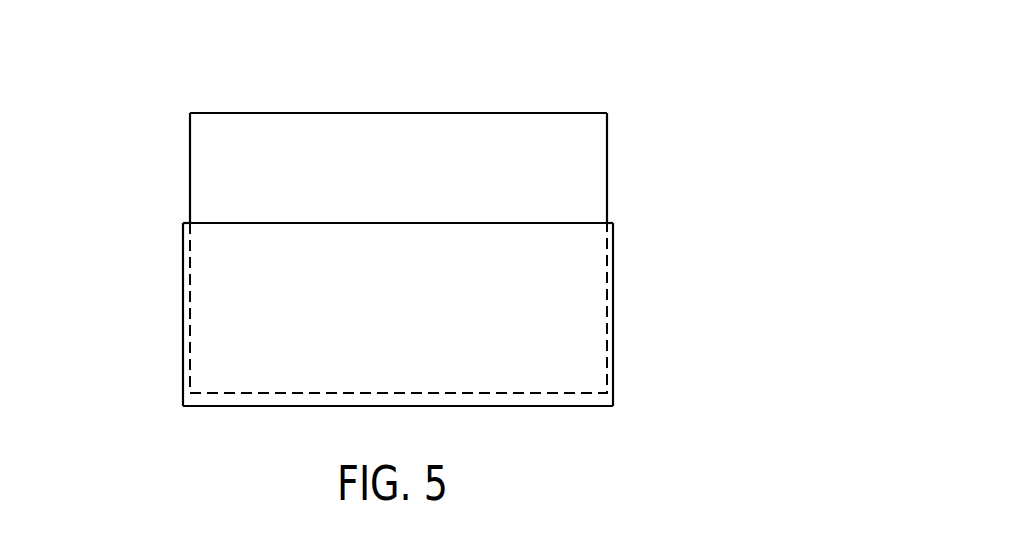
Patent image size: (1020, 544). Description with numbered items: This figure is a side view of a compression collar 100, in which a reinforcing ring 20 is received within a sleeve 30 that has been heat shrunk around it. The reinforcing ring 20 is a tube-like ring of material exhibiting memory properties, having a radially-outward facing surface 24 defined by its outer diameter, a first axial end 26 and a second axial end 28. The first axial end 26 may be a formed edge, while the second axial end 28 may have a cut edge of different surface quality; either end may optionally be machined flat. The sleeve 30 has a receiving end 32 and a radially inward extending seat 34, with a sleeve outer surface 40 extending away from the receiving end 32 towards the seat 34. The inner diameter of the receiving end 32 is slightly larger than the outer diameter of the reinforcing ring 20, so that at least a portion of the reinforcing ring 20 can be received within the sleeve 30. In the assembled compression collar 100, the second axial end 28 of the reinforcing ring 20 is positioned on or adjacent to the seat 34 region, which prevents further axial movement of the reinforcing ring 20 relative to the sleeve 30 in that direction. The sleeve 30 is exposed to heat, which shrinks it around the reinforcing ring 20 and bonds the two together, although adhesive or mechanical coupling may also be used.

The compression collar 100 is at (372, 253).
The reinforcing ring 20 is at (363, 130).
The radially-outward facing surface 24 is at (190, 167).
The first axial end 26 is at (267, 113).
The second axial end 28 is at (257, 392).
The sleeve 30 is at (372, 350).
The receiving end 32 is at (556, 223).
The radially inward extending seat 34 is at (537, 407).
The sleeve outer surface 40 is at (613, 315).